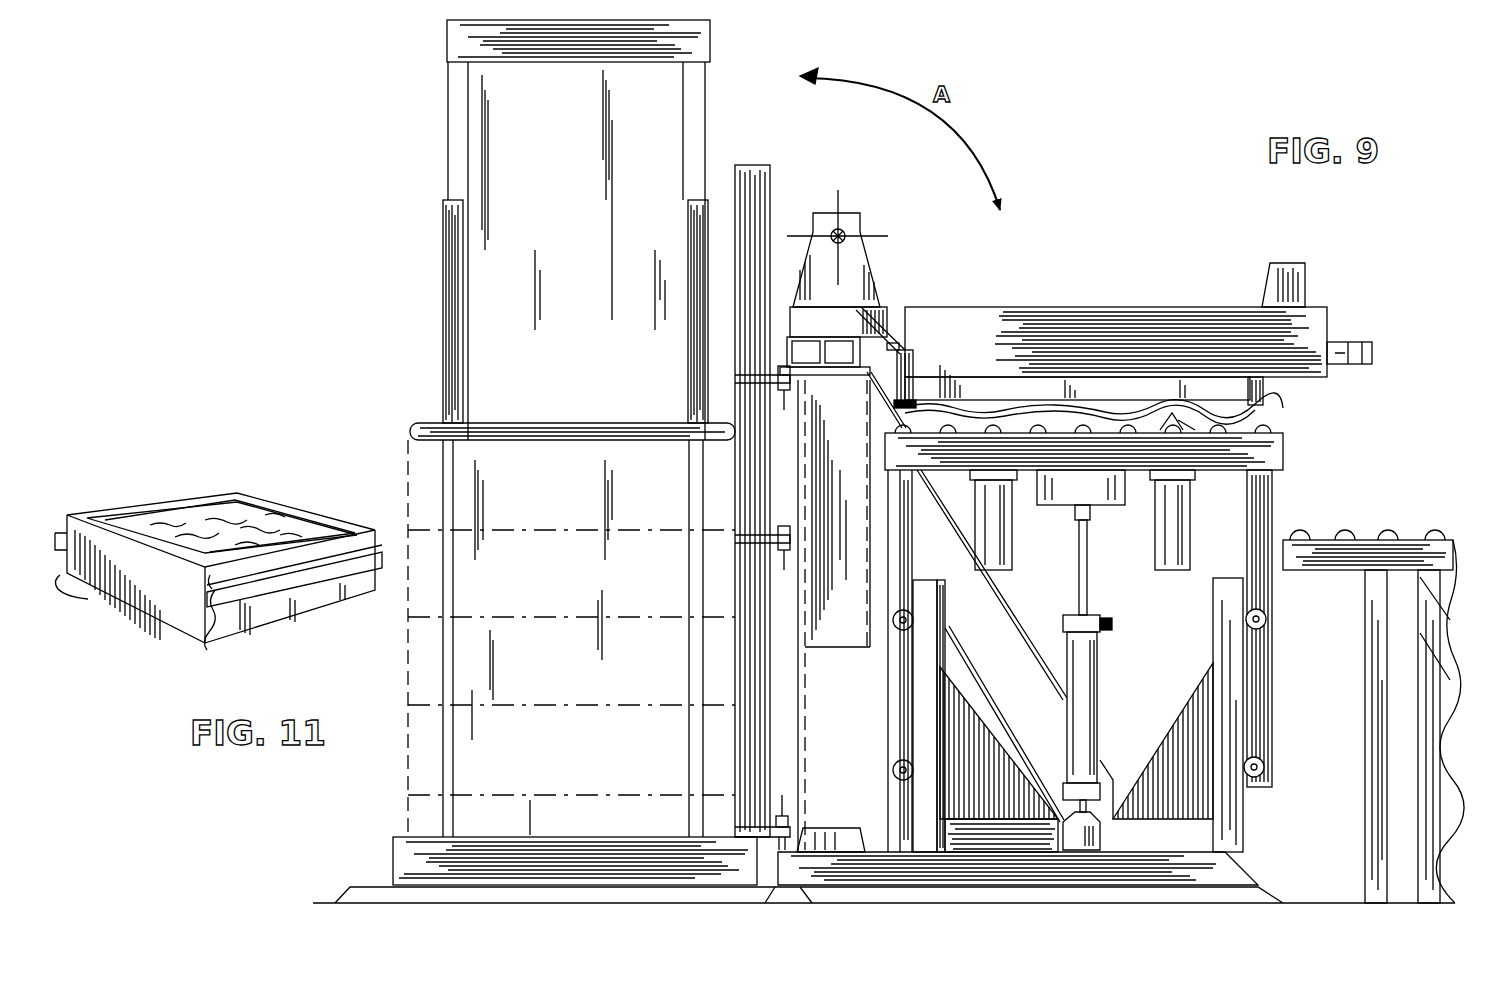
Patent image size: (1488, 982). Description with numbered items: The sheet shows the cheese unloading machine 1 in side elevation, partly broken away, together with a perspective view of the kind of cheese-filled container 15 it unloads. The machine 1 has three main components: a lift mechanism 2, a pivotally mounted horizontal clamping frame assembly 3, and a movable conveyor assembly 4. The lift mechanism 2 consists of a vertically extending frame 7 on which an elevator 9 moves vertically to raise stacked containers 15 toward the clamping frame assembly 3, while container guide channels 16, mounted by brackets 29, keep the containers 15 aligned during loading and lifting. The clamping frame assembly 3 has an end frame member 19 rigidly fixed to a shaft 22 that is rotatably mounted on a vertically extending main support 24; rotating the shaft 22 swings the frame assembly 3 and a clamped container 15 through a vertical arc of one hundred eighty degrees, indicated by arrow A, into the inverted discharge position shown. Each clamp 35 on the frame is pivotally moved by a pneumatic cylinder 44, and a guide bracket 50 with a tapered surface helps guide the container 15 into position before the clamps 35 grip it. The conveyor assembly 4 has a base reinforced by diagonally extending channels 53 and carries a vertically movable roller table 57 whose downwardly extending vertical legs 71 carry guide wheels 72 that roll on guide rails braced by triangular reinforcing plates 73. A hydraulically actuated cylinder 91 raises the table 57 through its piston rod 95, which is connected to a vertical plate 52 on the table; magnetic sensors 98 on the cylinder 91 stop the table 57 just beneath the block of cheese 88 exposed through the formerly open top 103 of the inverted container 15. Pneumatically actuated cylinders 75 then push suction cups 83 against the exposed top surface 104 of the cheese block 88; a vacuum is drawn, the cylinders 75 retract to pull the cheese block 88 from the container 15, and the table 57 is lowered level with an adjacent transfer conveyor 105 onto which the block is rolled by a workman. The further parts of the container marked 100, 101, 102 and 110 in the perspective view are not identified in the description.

In FIG. 9, the cheese unloading machine 1 is at (1092, 292).
In FIG. 9, the lift mechanism 2 is at (385, 860).
In FIG. 9, the clamping frame assembly 3 is at (1172, 306).
In FIG. 9, the movable conveyor assembly 4 is at (1288, 510).
In FIG. 9, the vertically extending frame 7 is at (445, 262).
In FIG. 9, the elevator 9 is at (478, 315).
In FIG. 9, the cheese-filled container 15 is at (398, 778).
In FIG. 11, the cheese-filled container 15 is at (230, 505).
In FIG. 9, the container guide channels 16 is at (772, 178).
In FIG. 9, the end frame member 19 is at (862, 292).
In FIG. 9, the shaft 22 is at (845, 236).
In FIG. 9, the vertical main support 24 is at (862, 487).
In FIG. 9, the bracket 29 is at (786, 818).
In FIG. 9, the clamp 35 is at (910, 318).
In FIG. 9, the cylinder 44 is at (1350, 342).
In FIG. 9, the guide bracket 50 is at (1300, 282).
In FIG. 9, the vertical plate 52 is at (1100, 490).
In FIG. 9, the diagonally extending channel 53 is at (990, 620).
In FIG. 9, the roller table 57 is at (1286, 457).
In FIG. 9, the vertical leg 71 is at (1262, 740).
In FIG. 9, the guide wheel 72 is at (1266, 771).
In FIG. 9, the triangular-shaped reinforcing plate 73 is at (985, 745).
In FIG. 9, the pneumatically actuated cylinder 75 is at (1178, 551).
In FIG. 9, the suction cup 83 is at (1012, 410).
In FIG. 11, the block of cheese 88 is at (238, 530).
In FIG. 9, the hydraulically actuated cylinder 91 is at (1093, 690).
In FIG. 9, the piston rod 95 is at (1087, 592).
In FIG. 9, the magnetic sensor 98 is at (1114, 626).
In FIG. 11, the side wall 100 is at (97, 597).
In FIG. 11, the latch 101 is at (56, 518).
In FIG. 11, the upper edge 102 is at (162, 468).
In FIG. 11, the open top 103 is at (295, 518).
In FIG. 9, the exposed top surface 104 is at (1228, 411).
In FIG. 11, the exposed top surface 104 is at (195, 540).
In FIG. 9, the transfer conveyor 105 is at (1330, 535).
In FIG. 11, the ledge 110 is at (240, 600).